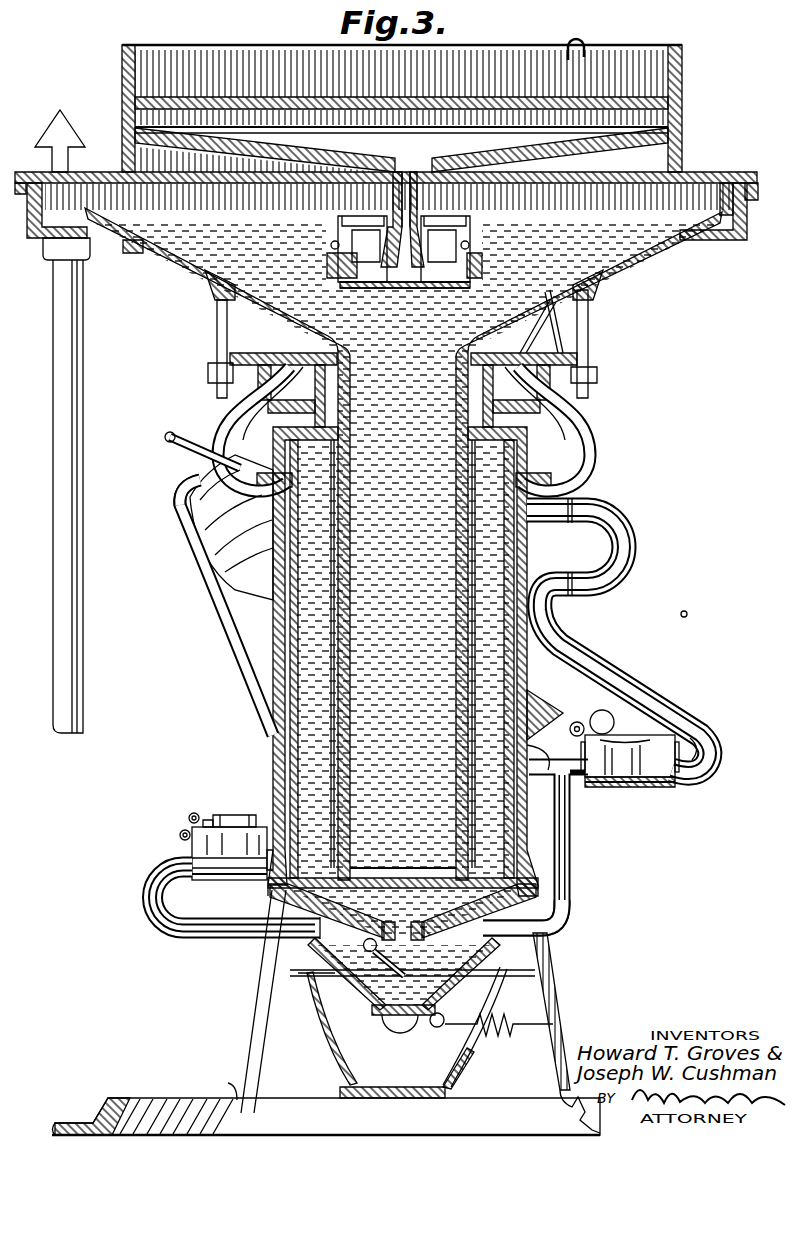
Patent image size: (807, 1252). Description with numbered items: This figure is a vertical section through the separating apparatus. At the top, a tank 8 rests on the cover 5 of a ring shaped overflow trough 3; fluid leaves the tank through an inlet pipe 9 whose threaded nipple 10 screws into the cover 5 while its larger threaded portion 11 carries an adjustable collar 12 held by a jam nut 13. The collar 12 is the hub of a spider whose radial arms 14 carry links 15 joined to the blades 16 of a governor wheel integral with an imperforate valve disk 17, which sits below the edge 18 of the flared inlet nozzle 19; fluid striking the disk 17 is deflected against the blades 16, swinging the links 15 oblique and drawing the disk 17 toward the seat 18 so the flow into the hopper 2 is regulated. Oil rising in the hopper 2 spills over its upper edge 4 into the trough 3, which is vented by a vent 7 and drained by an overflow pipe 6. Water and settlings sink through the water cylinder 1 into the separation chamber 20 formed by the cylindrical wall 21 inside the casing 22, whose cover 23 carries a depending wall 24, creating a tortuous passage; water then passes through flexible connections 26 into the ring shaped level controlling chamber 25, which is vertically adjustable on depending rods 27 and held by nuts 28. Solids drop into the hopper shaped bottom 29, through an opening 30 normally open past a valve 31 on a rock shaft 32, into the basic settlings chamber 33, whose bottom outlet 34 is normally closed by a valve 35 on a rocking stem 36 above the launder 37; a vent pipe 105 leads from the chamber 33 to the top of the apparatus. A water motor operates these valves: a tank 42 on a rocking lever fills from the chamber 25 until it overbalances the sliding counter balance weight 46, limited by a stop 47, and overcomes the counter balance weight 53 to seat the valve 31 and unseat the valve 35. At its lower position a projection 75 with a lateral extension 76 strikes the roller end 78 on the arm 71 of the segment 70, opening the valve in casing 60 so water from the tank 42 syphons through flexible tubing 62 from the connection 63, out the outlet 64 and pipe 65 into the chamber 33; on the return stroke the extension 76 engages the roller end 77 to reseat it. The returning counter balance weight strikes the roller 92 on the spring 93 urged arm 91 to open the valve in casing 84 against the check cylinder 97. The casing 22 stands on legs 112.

The water cylinder 1 is at (545, 630).
The hopper 2 is at (630, 263).
The overflow trough 3 is at (746, 200).
The upper edge 4 is at (712, 200).
The cover 5 is at (693, 167).
The overflow pipe 6 is at (84, 365).
The vent 7 is at (66, 150).
The tank 8 is at (684, 96).
The inlet pipe 9 is at (414, 174).
The threaded nipple 10 is at (400, 178).
The threaded portion 11 is at (420, 212).
The threaded collar 12 is at (469, 245).
The jam nut 13 is at (442, 238).
The arms 14 is at (358, 258).
The links 15 is at (472, 225).
The blades 16 is at (341, 250).
The valve disk 17 is at (370, 288).
The edge 18 is at (387, 263).
The inlet nozzle 19 is at (355, 268).
The separation chamber 20 is at (520, 815).
The cylindrical wall 21 is at (527, 838).
The casing 22 is at (533, 563).
The cover 23 is at (240, 412).
The depending cylindrical wall 24 is at (276, 594).
The level controlling chamber 25 is at (512, 368).
The flexible connection 26 is at (597, 452).
The depending rods 27 is at (590, 315).
The nuts 28 is at (597, 372).
The hopper shaped bottom 29 is at (545, 887).
The opening 30 is at (545, 937).
The valve 31 is at (325, 975).
The rock shaft 32 is at (362, 950).
The basic settlings chamber 33 is at (530, 979).
The bottom outlet 34 is at (377, 1017).
The valve 35 is at (462, 1070).
The rocking stem 36 is at (444, 1028).
The launder 37 is at (345, 1099).
The tank 42 is at (212, 543).
The counter balance weight 46 is at (540, 708).
The stop 47 is at (618, 787).
The counter balance weight 53 is at (515, 1023).
The valve casing 60 is at (188, 857).
The flexible tubing 62 is at (243, 650).
The connection 63 is at (193, 487).
The outlet 64 is at (190, 847).
The pipe 65 is at (160, 895).
The segment 70 is at (213, 827).
The arm 71 is at (208, 826).
The projection 75 is at (190, 448).
The lateral extension 76 is at (167, 433).
The roller end 77 is at (197, 813).
The roller end 78 is at (186, 830).
The valve casing 84 is at (674, 782).
The arm 91 is at (668, 742).
The roller 92 is at (614, 710).
The spring 93 is at (605, 734).
The check cylinder 97 is at (700, 742).
The vent pipe 105 is at (603, 287).
The legs 112 is at (247, 1015).